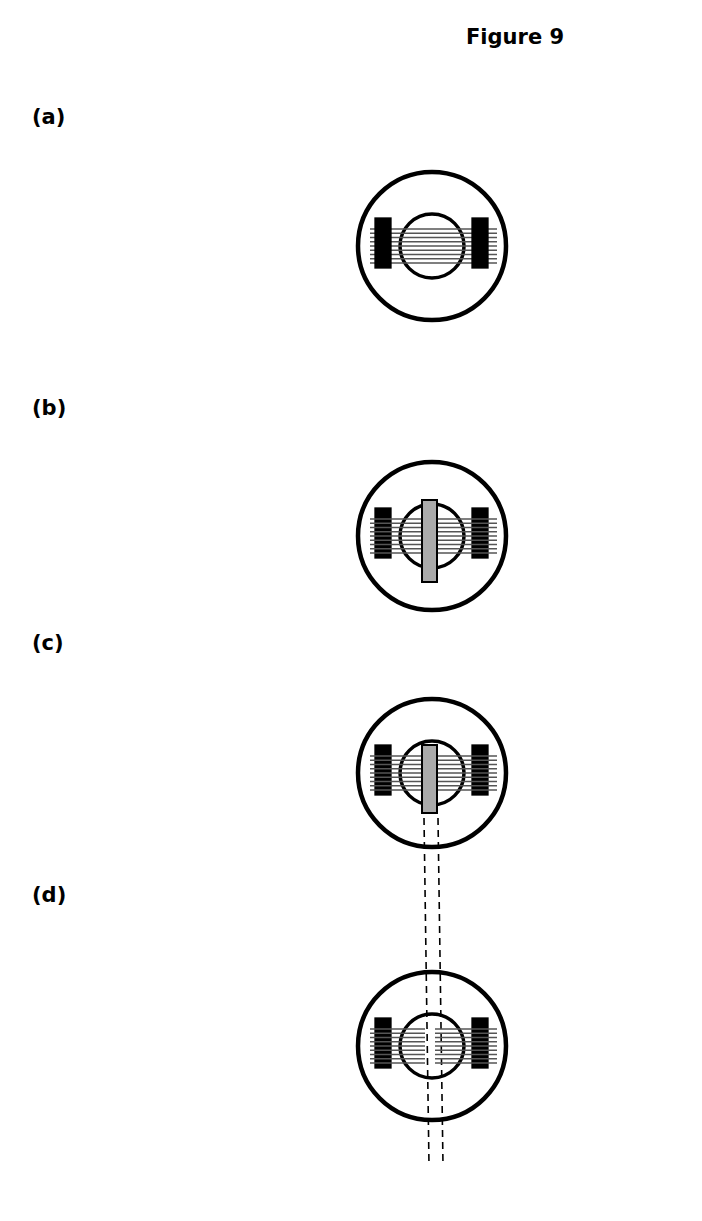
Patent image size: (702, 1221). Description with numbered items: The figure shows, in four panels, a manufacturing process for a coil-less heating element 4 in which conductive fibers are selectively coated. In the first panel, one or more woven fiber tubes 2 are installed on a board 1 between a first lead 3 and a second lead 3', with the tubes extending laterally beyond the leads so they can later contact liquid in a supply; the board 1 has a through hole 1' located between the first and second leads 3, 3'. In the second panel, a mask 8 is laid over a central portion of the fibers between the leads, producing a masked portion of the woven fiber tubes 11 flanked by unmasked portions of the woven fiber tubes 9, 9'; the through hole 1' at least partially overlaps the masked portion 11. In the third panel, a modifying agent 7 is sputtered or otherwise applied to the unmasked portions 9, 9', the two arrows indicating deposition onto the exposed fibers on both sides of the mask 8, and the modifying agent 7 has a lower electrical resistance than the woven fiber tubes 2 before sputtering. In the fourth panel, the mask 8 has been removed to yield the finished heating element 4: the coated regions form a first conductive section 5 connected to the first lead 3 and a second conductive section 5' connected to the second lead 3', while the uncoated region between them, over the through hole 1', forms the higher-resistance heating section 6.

The board 1 is at (432, 302).
The through hole 1' is at (438, 303).
The woven fiber tubes 2 is at (492, 242).
The first lead 3 is at (364, 300).
The second lead 3' is at (512, 291).
The mask 8 is at (430, 513).
The masked portion of the woven fiber tube(s) 11 is at (427, 550).
The unmasked portion of the woven fiber tube(s) 9 is at (388, 595).
The unmasked portion of the woven fiber tube(s) 9' is at (474, 583).
The modifying agent 7 is at (410, 752).
The heating element 4 is at (510, 1030).
The first conductive section 5 is at (389, 1105).
The second conductive section 5' is at (476, 1093).
The heating section 6 is at (428, 1060).